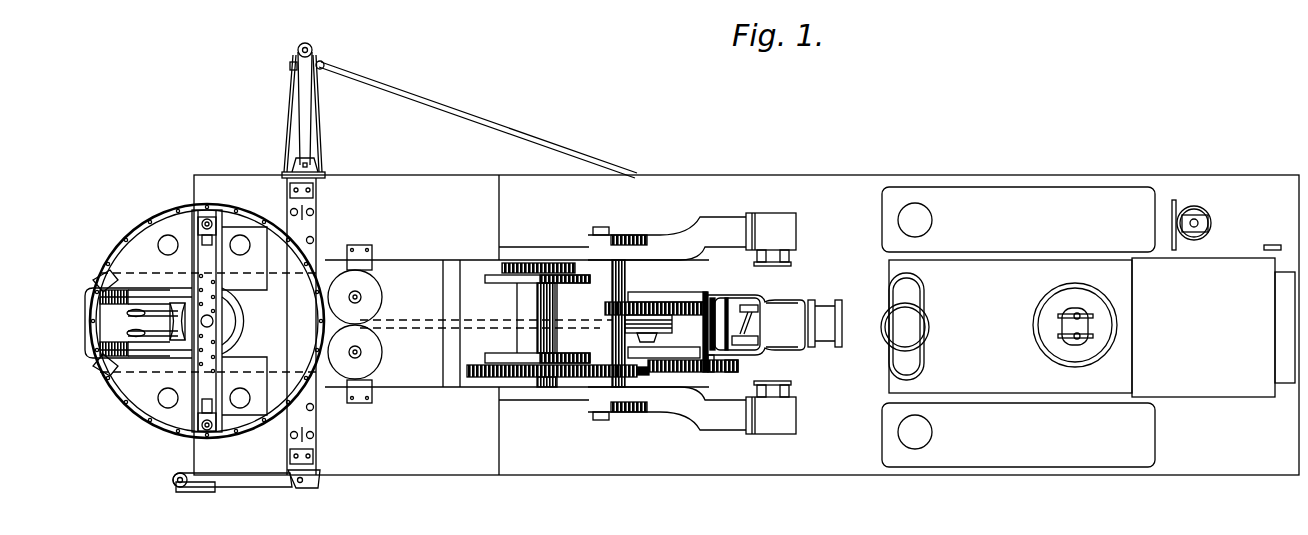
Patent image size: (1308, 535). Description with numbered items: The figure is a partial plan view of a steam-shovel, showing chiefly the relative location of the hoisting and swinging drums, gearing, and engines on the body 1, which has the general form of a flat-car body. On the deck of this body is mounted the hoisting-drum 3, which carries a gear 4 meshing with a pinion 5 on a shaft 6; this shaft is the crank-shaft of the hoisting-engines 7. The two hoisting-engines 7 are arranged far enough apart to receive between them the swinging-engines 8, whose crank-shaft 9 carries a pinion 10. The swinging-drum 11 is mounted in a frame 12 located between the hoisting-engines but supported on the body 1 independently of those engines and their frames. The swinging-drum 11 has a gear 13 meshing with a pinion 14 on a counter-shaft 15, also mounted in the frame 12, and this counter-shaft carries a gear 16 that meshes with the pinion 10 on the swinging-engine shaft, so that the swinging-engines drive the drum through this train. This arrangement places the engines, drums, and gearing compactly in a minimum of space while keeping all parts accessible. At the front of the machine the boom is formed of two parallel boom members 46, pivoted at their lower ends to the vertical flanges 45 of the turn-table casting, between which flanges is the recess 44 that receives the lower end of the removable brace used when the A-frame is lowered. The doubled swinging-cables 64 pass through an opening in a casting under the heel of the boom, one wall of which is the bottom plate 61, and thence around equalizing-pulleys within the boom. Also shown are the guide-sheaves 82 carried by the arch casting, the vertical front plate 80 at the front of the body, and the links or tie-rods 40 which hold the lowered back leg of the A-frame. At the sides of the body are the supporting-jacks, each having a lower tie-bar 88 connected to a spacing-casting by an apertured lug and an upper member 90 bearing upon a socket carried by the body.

The body 1 is at (1168, 476).
The hoisting-drum 3 is at (486, 317).
The gear 4 is at (572, 378).
The pinion 5 is at (644, 378).
The shaft 6 is at (613, 283).
The hoisting-engines 7 is at (714, 228).
The swinging-engines 8 is at (792, 313).
The crank-shaft 9 is at (782, 310).
The pinion 10 is at (740, 367).
The swinging-drum 11 is at (612, 328).
The frame 12 is at (684, 294).
The gear 13 is at (646, 302).
The pinion 14 is at (707, 296).
The counter-shaft 15 is at (688, 340).
The gear 16 is at (710, 372).
The links or tie-rods 40 is at (140, 350).
The recess 44 is at (172, 345).
The vertical flanges 45 is at (178, 305).
The boom members 46 is at (143, 295).
The bottom plate 61 is at (85, 290).
The cables 64 is at (168, 216).
The vertical front plate 80 is at (1270, 236).
The guide-sheaves 82 is at (385, 290).
The lower tie-bars 88 is at (286, 142).
The upper member 90 is at (306, 108).